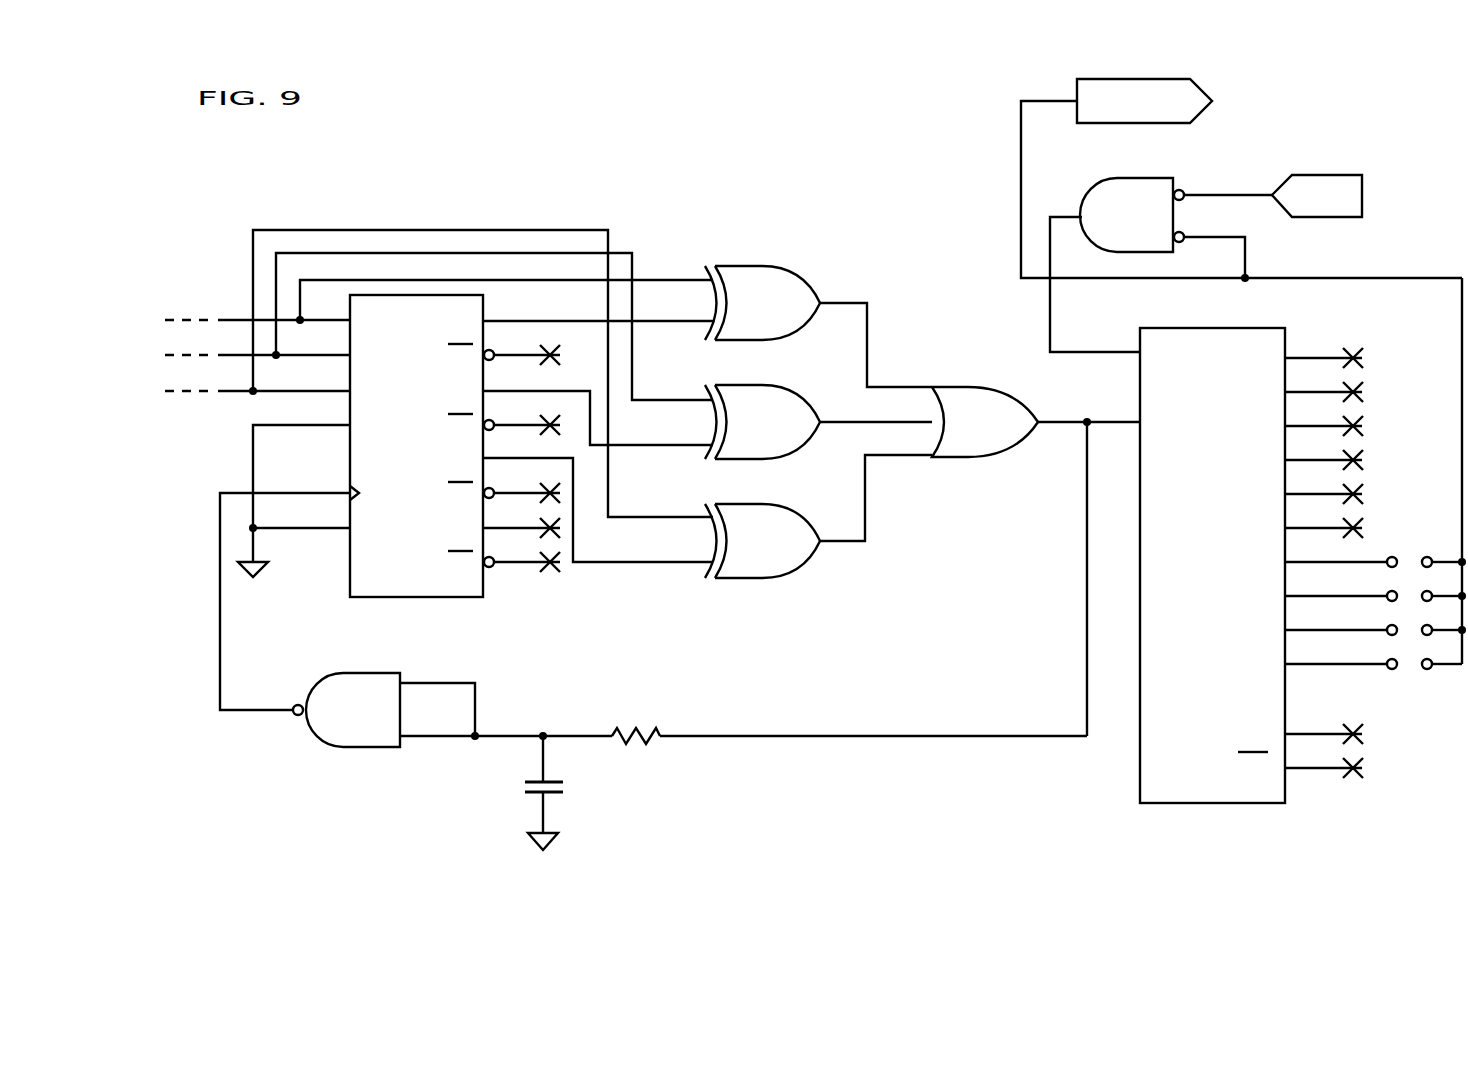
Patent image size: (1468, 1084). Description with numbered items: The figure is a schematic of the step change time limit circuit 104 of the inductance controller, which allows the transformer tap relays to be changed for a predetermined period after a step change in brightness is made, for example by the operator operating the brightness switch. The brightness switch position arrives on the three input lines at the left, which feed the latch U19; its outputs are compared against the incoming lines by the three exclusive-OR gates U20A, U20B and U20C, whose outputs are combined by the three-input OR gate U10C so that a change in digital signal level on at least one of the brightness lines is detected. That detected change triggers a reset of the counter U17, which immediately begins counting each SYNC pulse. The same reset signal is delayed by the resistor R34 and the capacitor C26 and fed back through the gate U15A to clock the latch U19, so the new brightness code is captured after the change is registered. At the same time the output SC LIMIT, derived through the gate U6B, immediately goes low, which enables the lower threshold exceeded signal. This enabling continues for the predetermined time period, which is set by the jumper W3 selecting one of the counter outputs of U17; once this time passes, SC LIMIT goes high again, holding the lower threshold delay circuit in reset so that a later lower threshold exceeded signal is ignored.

The step change time limit circuit 104 is at (469, 143).
The quad D latch 4042 U19 is at (439, 461).
The XOR gate 4070 U20A is at (759, 292).
The XOR gate 4070 U20B is at (759, 411).
The XOR gate 4070 U20C is at (765, 530).
The 3-input OR gate 4075 U10C is at (977, 408).
The counter U17 is at (1251, 571).
The NOR gate 4001 U6B is at (1132, 201).
The NAND gate 4093 U15A is at (352, 695).
The resistor 47.5K R34 is at (634, 738).
The capacitor 0.1 uF C26 is at (516, 793).
The jumper W3 is at (1375, 598).